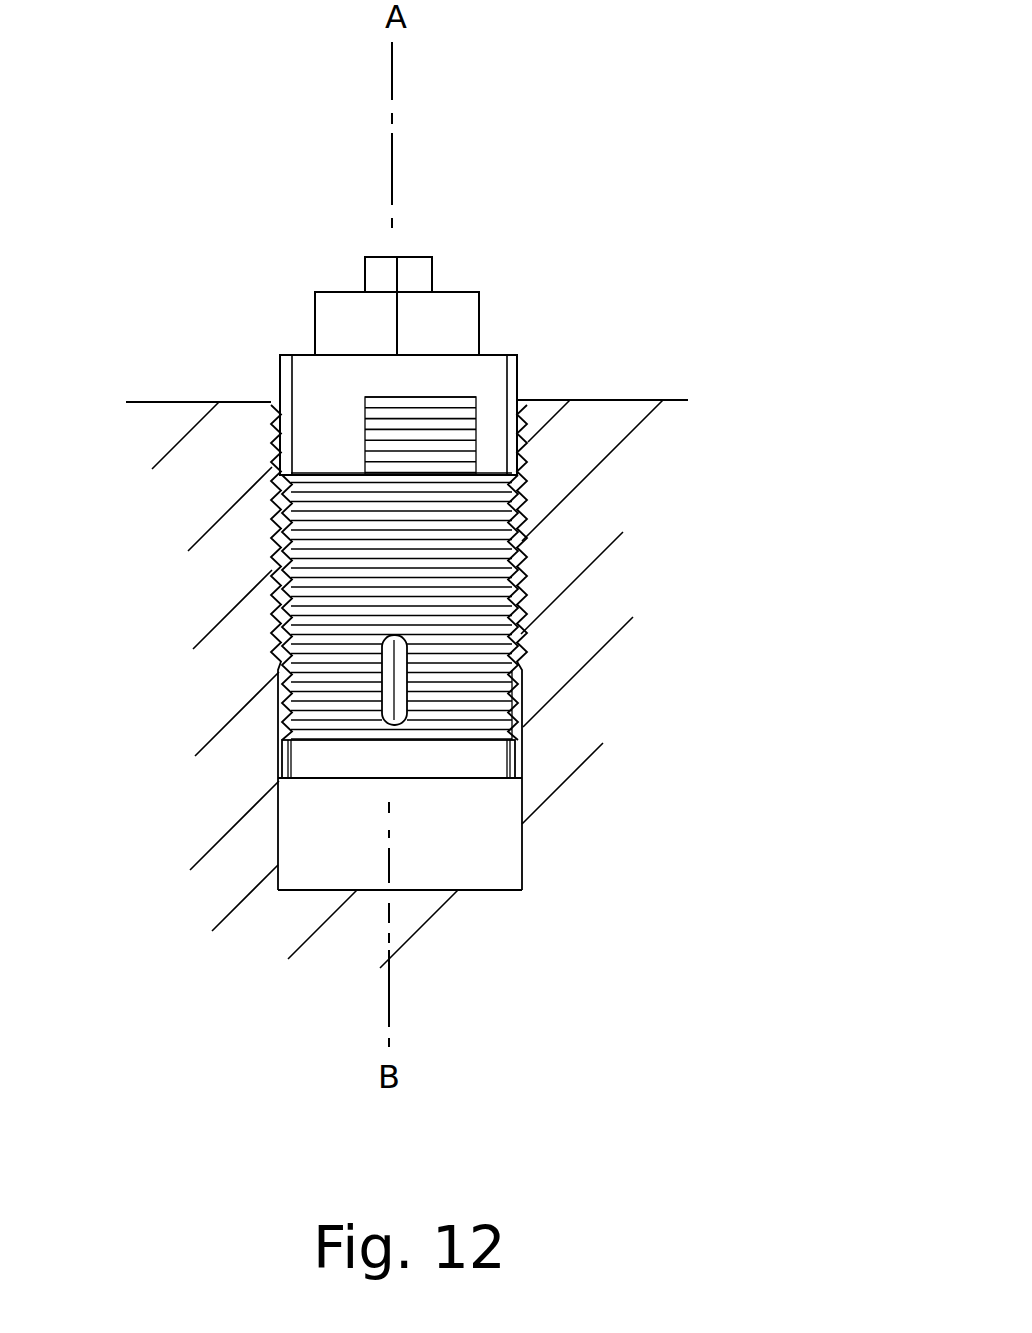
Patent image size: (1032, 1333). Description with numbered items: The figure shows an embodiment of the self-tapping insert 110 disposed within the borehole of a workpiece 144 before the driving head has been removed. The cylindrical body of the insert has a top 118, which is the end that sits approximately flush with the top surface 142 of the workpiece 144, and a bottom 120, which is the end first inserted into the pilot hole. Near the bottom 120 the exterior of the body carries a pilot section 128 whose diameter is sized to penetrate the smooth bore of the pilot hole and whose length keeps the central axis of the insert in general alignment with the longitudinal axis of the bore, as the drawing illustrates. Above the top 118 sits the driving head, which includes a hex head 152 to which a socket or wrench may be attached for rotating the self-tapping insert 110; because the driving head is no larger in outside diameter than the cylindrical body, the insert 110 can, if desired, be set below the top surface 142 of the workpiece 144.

The self-tapping insert 110 is at (622, 288).
The top 118 is at (272, 401).
The bottom 120 is at (483, 780).
The pilot section 128 is at (517, 757).
The top surface 142 is at (590, 395).
The workpiece 144 is at (615, 658).
The hex head 152 is at (480, 313).